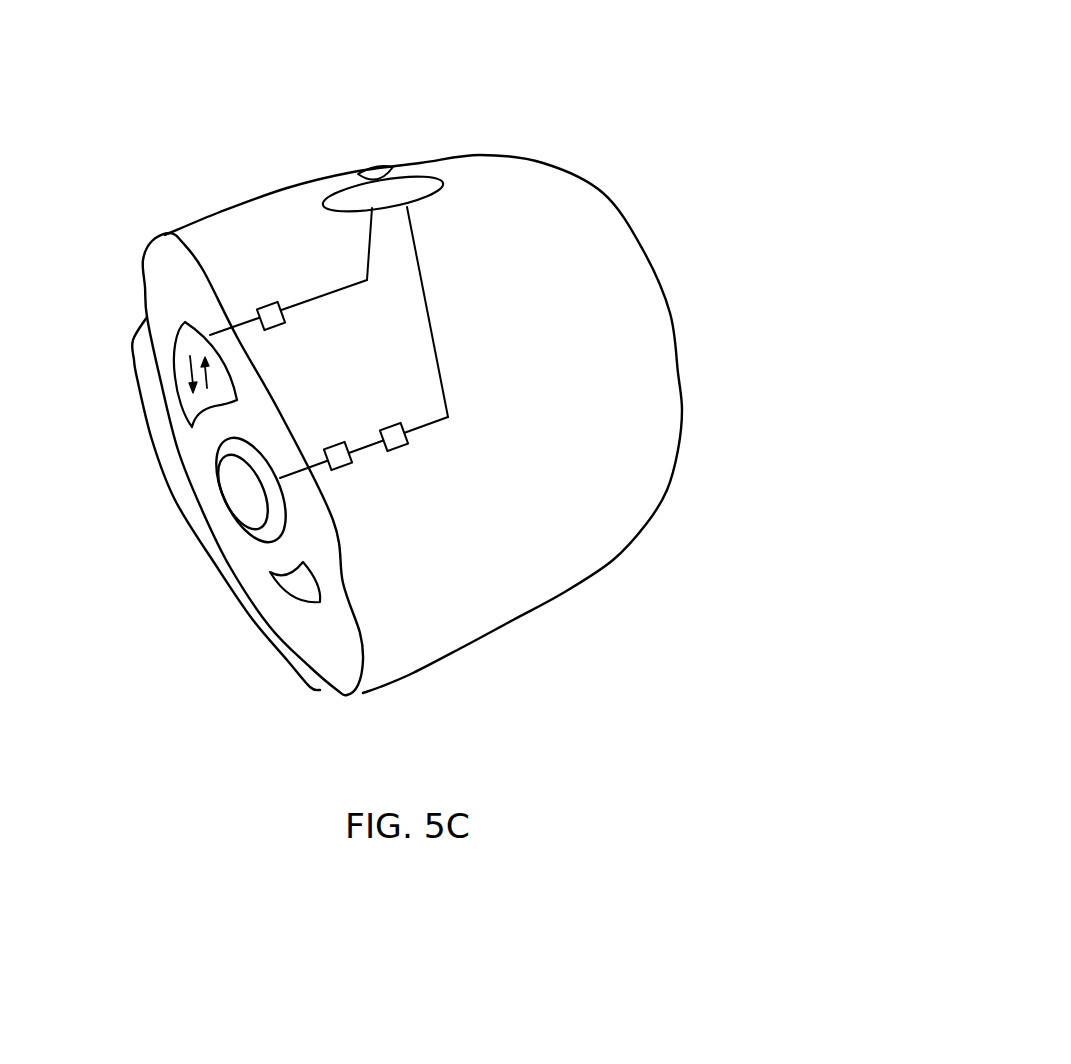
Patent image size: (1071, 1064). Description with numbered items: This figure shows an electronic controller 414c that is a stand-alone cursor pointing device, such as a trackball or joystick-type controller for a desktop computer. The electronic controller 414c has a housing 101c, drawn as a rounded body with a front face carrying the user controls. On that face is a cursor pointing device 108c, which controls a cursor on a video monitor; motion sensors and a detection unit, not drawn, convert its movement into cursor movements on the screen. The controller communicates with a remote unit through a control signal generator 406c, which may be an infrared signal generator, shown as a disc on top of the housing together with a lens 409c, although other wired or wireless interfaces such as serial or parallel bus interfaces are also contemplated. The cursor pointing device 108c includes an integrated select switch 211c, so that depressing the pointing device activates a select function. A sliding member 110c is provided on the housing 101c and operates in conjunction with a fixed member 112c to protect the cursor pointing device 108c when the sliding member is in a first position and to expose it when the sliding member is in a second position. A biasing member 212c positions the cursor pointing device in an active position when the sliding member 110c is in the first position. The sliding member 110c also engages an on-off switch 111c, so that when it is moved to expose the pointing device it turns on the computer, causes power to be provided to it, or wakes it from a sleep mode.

The electronic controller 414c is at (647, 78).
The lens 409c is at (372, 170).
The control signal generator 406c is at (436, 195).
The on-off switch 111c is at (266, 313).
The select switch 211c is at (398, 440).
The biasing member 212c is at (338, 458).
The sliding member 110c is at (177, 378).
The cursor pointing device 108c is at (232, 507).
The fixed member 112c is at (289, 593).
The housing 101c is at (664, 389).